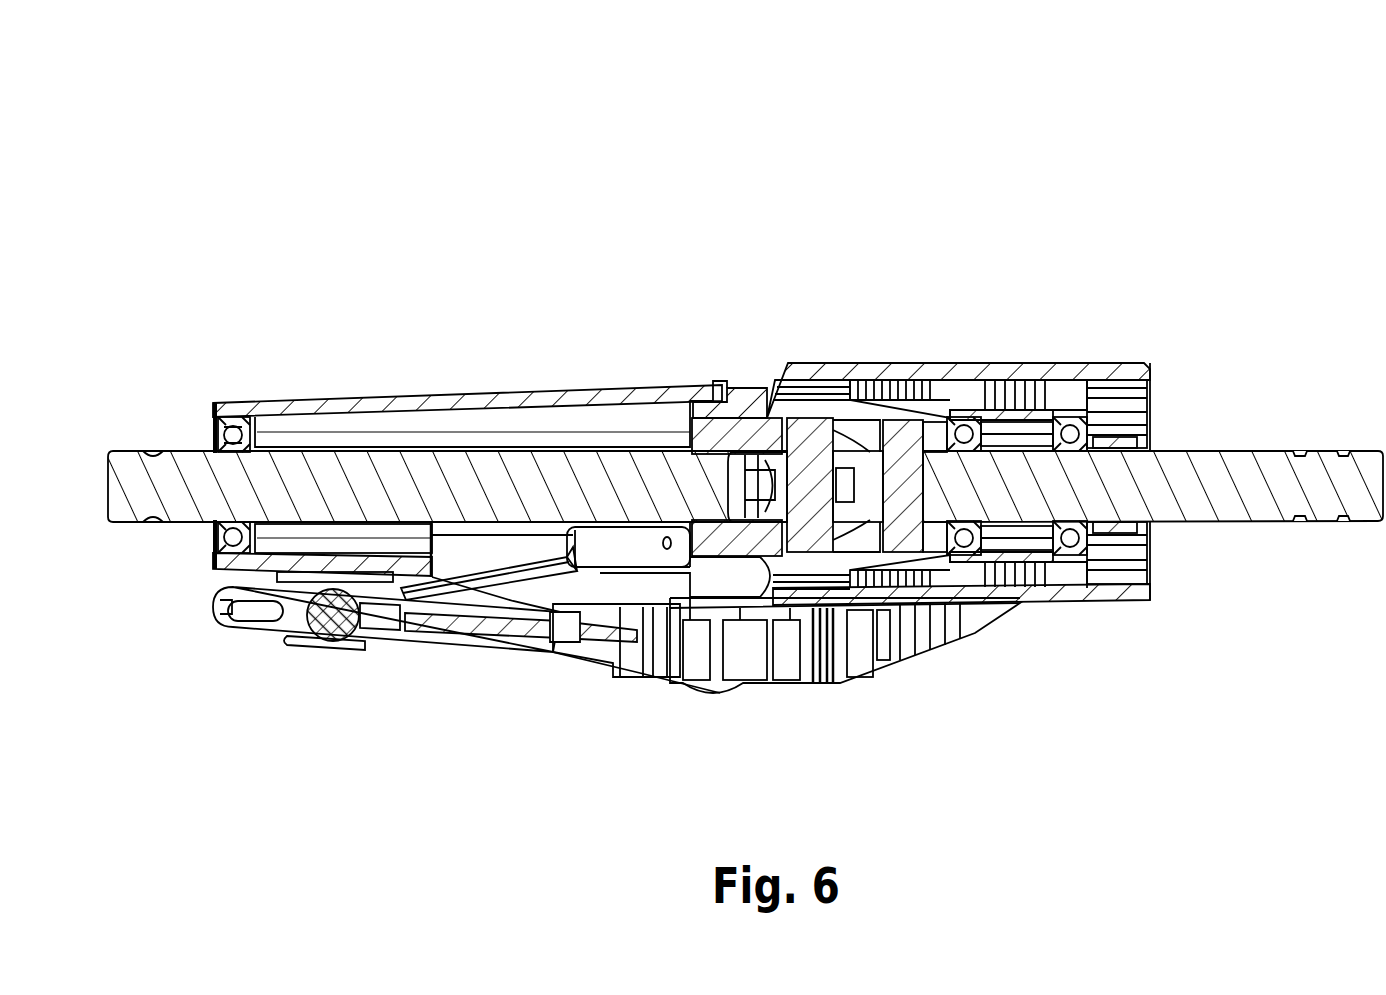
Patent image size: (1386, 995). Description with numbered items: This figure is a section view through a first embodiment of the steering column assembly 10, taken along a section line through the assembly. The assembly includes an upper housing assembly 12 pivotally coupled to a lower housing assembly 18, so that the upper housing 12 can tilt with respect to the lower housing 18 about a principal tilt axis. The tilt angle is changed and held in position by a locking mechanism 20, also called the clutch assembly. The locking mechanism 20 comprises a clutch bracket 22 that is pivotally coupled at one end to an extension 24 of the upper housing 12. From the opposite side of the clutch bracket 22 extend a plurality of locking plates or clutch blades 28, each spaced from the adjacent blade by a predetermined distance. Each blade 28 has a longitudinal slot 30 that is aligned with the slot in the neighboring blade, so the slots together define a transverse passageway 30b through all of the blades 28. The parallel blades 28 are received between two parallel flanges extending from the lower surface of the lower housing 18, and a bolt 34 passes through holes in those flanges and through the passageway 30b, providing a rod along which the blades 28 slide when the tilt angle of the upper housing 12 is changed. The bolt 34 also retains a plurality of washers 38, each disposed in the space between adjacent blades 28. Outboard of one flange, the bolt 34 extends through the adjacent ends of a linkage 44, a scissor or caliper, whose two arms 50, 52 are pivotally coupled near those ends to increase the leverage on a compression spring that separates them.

The steering column assembly 10 is at (868, 165).
The upper housing assembly 12 is at (964, 358).
The lower housing assembly 18 is at (479, 382).
The locking mechanism 20 is at (498, 675).
The clutch bracket 22 is at (551, 652).
The extension 24 is at (868, 680).
The clutch blade 28 is at (423, 638).
The longitudinal slot 30 is at (250, 612).
The transverse passageway 30b is at (249, 695).
The bolt 34 is at (361, 640).
The washer 38 is at (349, 648).
The linkage 44 is at (570, 577).
The arm 50 is at (452, 580).
The arm 52 is at (605, 577).